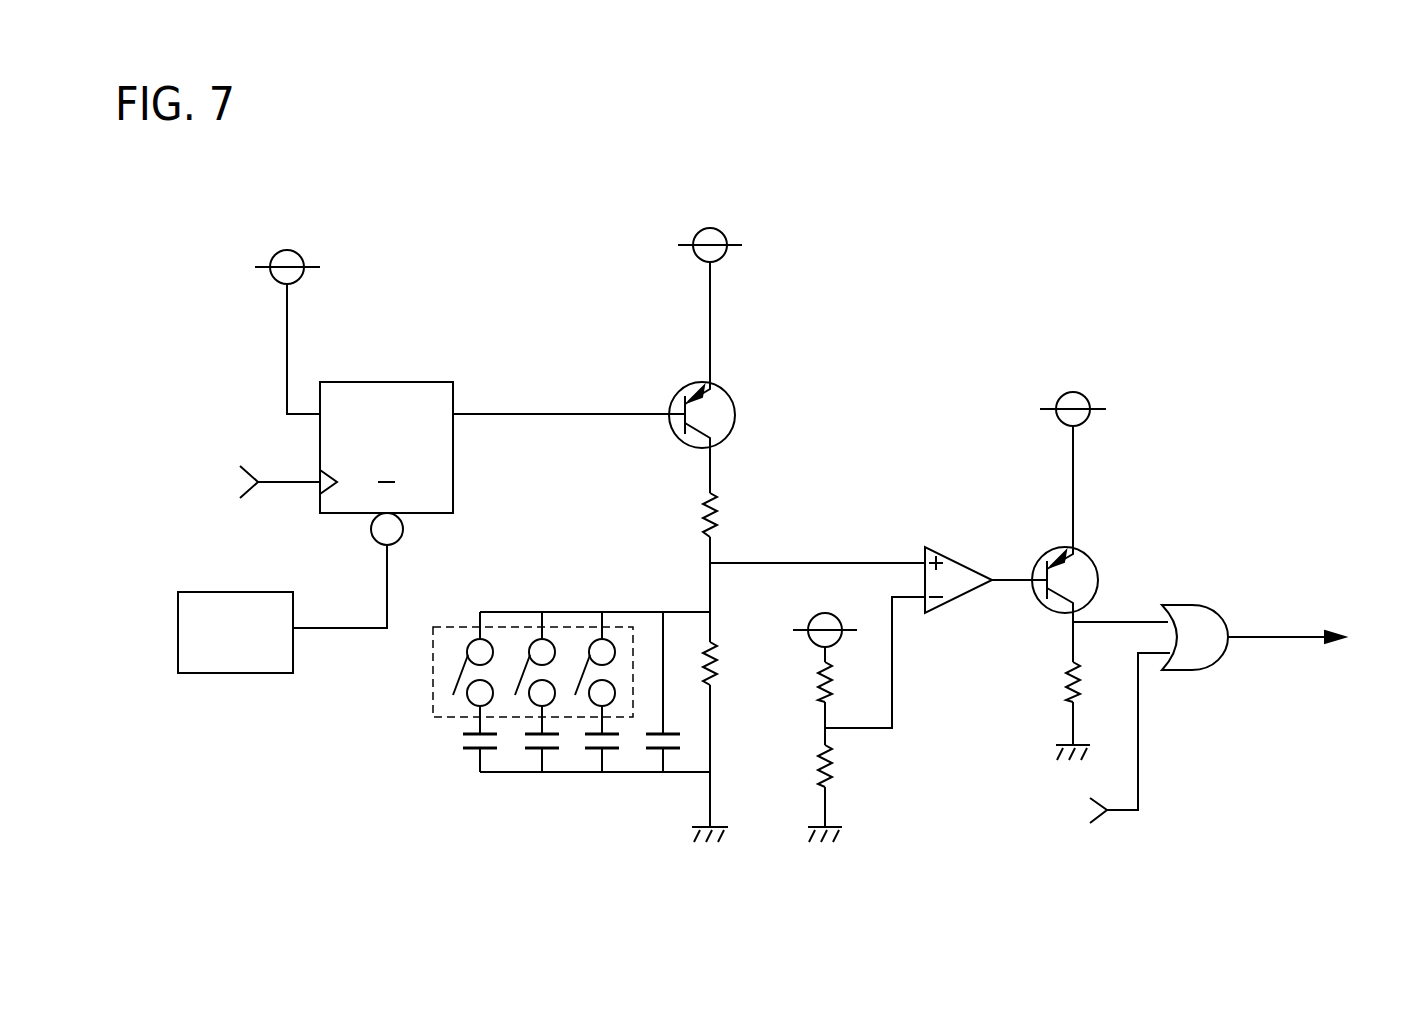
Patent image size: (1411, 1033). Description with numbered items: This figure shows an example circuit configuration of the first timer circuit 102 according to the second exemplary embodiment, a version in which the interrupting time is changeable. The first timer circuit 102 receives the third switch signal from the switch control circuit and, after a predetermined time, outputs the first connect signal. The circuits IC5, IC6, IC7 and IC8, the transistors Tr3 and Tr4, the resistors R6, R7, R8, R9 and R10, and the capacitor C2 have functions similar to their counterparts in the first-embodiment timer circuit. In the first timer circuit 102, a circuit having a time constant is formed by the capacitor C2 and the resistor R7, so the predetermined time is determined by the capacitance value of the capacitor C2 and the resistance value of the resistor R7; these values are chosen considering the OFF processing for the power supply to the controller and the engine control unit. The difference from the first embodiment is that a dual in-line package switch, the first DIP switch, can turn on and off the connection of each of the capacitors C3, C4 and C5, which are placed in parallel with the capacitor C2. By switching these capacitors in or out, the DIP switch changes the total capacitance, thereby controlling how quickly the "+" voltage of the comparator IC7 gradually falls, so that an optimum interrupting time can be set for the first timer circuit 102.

The timer circuit 1 102 is at (920, 905).
The circuit IC5 is at (388, 382).
The circuit IC6 is at (235, 651).
The comparator IC7 is at (958, 566).
The circuit IC8 is at (1218, 614).
The transistor Tr3 is at (734, 398).
The transistor Tr4 is at (1096, 568).
The resistor R6 is at (727, 515).
The resistor R7 is at (726, 663).
The resistor R8 is at (806, 683).
The resistor R9 is at (806, 767).
The resistor R10 is at (1048, 683).
The capacitor C2 is at (663, 711).
The capacitor C3 is at (480, 772).
The capacitor C4 is at (542, 772).
The capacitor C5 is at (602, 772).